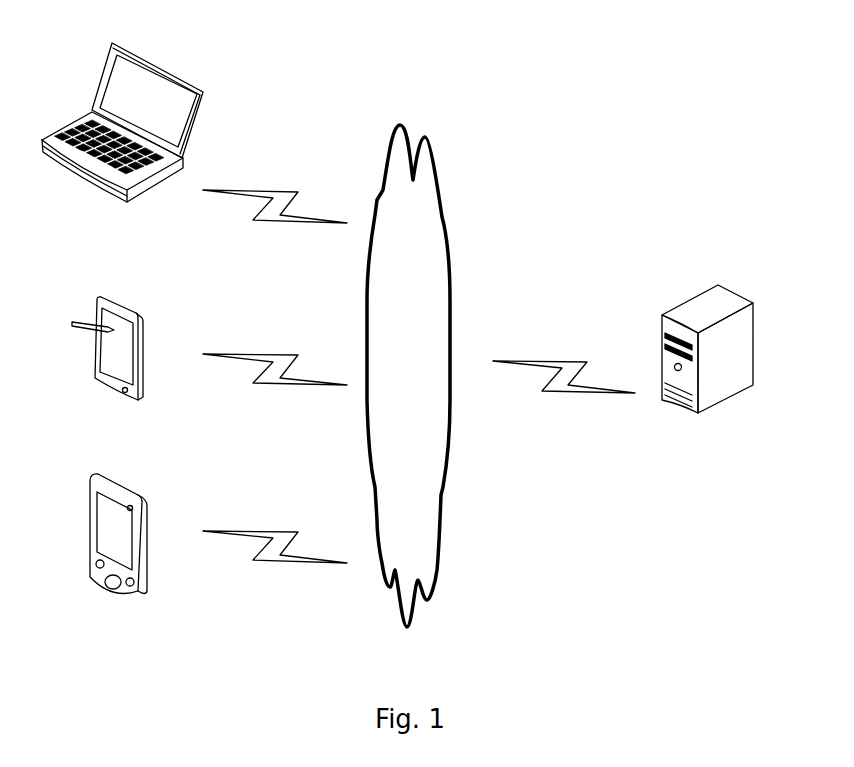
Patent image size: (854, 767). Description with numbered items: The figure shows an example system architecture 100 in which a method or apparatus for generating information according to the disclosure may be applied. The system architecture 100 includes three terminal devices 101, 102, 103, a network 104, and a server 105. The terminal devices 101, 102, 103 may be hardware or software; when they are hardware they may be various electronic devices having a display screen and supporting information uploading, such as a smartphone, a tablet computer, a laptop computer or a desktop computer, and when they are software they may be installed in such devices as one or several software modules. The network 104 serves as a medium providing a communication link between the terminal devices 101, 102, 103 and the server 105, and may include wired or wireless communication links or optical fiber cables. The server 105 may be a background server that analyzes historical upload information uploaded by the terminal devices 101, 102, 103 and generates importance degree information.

The system architecture 100 is at (621, 32).
The terminal device 101 is at (118, 558).
The terminal device 102 is at (107, 369).
The terminal device 103 is at (122, 142).
The network 104 is at (408, 376).
The server 105 is at (707, 371).